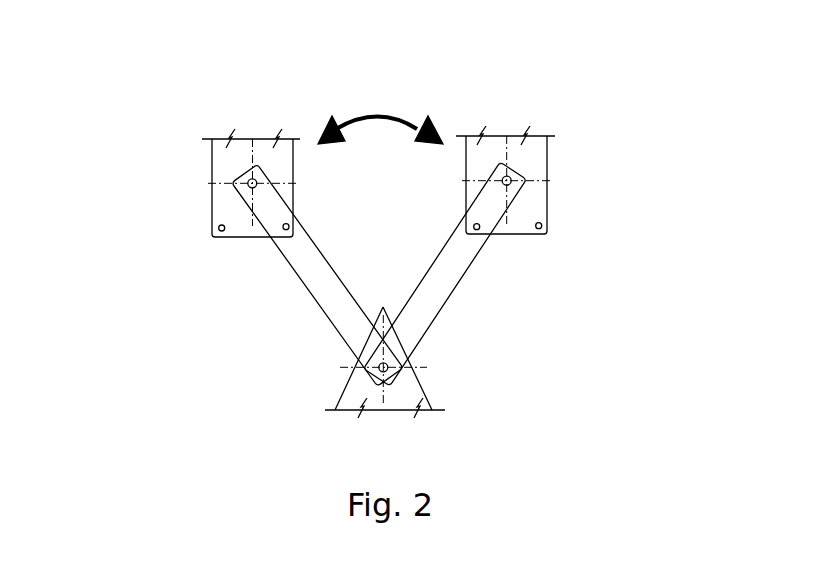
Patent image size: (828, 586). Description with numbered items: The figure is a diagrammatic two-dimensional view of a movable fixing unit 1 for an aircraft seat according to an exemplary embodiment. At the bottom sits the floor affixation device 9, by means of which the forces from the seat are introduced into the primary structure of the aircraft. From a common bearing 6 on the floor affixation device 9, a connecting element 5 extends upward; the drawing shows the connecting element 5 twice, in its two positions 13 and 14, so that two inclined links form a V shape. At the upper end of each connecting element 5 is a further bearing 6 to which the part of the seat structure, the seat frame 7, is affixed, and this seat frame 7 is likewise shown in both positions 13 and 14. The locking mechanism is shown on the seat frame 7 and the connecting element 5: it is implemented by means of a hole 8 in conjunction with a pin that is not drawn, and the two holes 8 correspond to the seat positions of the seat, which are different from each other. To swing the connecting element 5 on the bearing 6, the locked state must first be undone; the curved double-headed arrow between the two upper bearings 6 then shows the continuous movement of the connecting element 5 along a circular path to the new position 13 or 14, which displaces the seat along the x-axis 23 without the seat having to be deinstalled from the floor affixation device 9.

The suspension arrangement 1 is at (617, 93).
The connecting element 5 is at (295, 283).
The bearing 6 is at (248, 180).
The seat frame 7 is at (218, 192).
The hole 8 is at (217, 232).
The floor affixation device 9 is at (398, 412).
The position 13 is at (147, 118).
The position 14 is at (441, 90).
The x-axis 23 is at (373, 378).